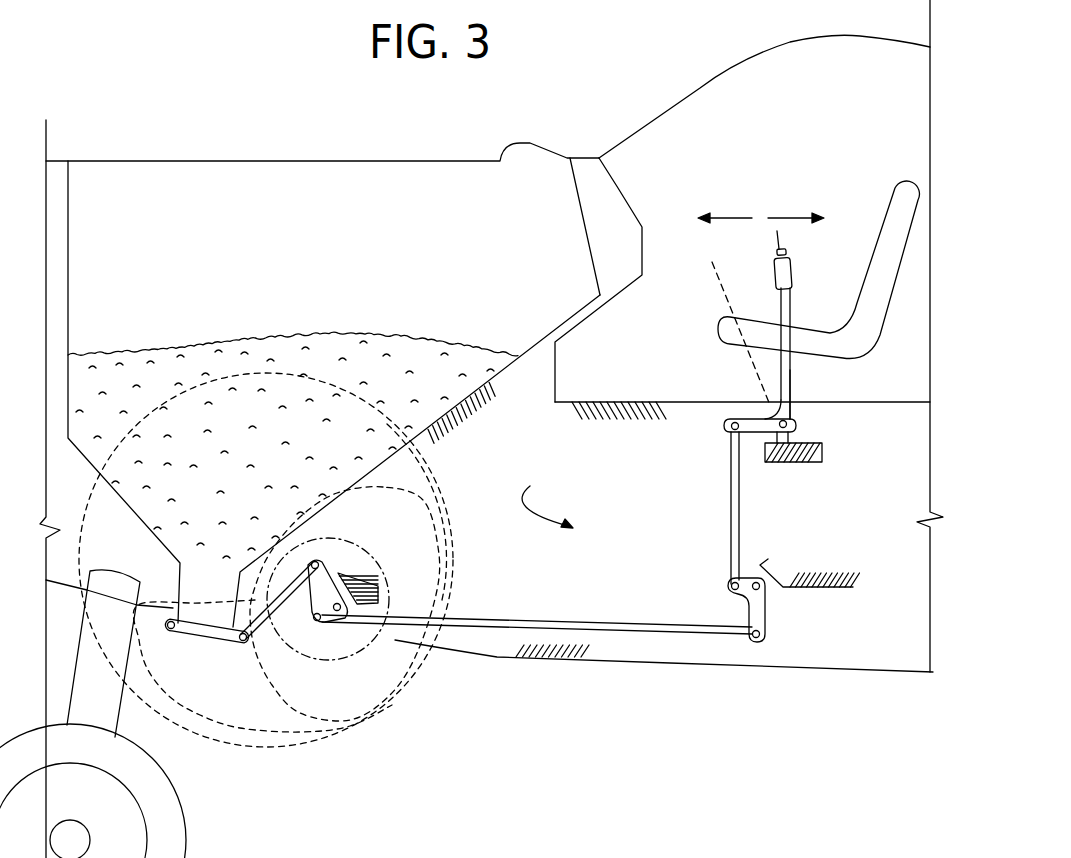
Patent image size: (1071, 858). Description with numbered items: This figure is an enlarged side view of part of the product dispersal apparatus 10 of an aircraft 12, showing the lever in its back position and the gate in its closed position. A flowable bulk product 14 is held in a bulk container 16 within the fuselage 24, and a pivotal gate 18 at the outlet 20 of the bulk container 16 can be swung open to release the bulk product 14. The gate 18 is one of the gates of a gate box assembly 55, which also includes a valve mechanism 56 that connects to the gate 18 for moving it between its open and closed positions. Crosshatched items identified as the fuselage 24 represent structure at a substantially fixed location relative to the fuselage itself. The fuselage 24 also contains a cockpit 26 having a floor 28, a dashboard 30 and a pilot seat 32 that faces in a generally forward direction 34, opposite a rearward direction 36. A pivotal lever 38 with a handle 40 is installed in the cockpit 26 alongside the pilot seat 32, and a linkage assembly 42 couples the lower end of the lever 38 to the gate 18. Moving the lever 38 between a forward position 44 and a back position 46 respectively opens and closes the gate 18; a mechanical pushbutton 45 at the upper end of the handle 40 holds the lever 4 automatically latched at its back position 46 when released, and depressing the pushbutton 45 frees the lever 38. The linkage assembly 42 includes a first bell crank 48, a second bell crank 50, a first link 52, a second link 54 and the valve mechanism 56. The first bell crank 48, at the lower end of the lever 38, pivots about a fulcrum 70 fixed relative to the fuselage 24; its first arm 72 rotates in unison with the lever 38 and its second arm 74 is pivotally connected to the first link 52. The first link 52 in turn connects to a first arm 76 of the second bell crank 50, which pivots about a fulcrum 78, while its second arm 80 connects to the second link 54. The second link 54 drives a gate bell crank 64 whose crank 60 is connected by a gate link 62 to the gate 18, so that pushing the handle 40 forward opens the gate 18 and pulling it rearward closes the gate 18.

The lever 4 is at (350, 729).
The product dispersal apparatus 10 is at (246, 112).
The aircraft 12 is at (135, 160).
The flowable bulk product 14 is at (217, 343).
The bulk container 16 is at (587, 210).
The gate 18 is at (217, 638).
The outlet 20 is at (190, 628).
The fuselage 24 is at (588, 402).
The cockpit 26 is at (845, 155).
The floor 28 is at (630, 402).
The dashboard 30 is at (643, 240).
The pilot seat 32 is at (875, 233).
The forward direction 34 is at (728, 216).
The rearward direction 36 is at (790, 216).
The lever 38 is at (780, 298).
The handle 40 is at (790, 266).
The linkage assembly 42 is at (547, 498).
The forward position 44 is at (712, 264).
The pushbutton 45 is at (773, 251).
The back position 46 is at (783, 238).
The first bell crank 48 is at (765, 468).
The second bell crank 50 is at (742, 593).
The first link 52 is at (731, 496).
The second link 54 is at (590, 618).
The gate box assembly 55 is at (245, 730).
The valve mechanism 56 is at (358, 640).
The crank 60 is at (330, 573).
The gate link 62 is at (287, 600).
The gate bell crank 64 is at (313, 597).
The fulcrum 70 is at (792, 421).
The first arm 72 is at (790, 395).
The second arm 74 is at (745, 400).
The first arm 76 is at (745, 580).
The fulcrum 78 is at (757, 591).
The second arm 80 is at (763, 622).